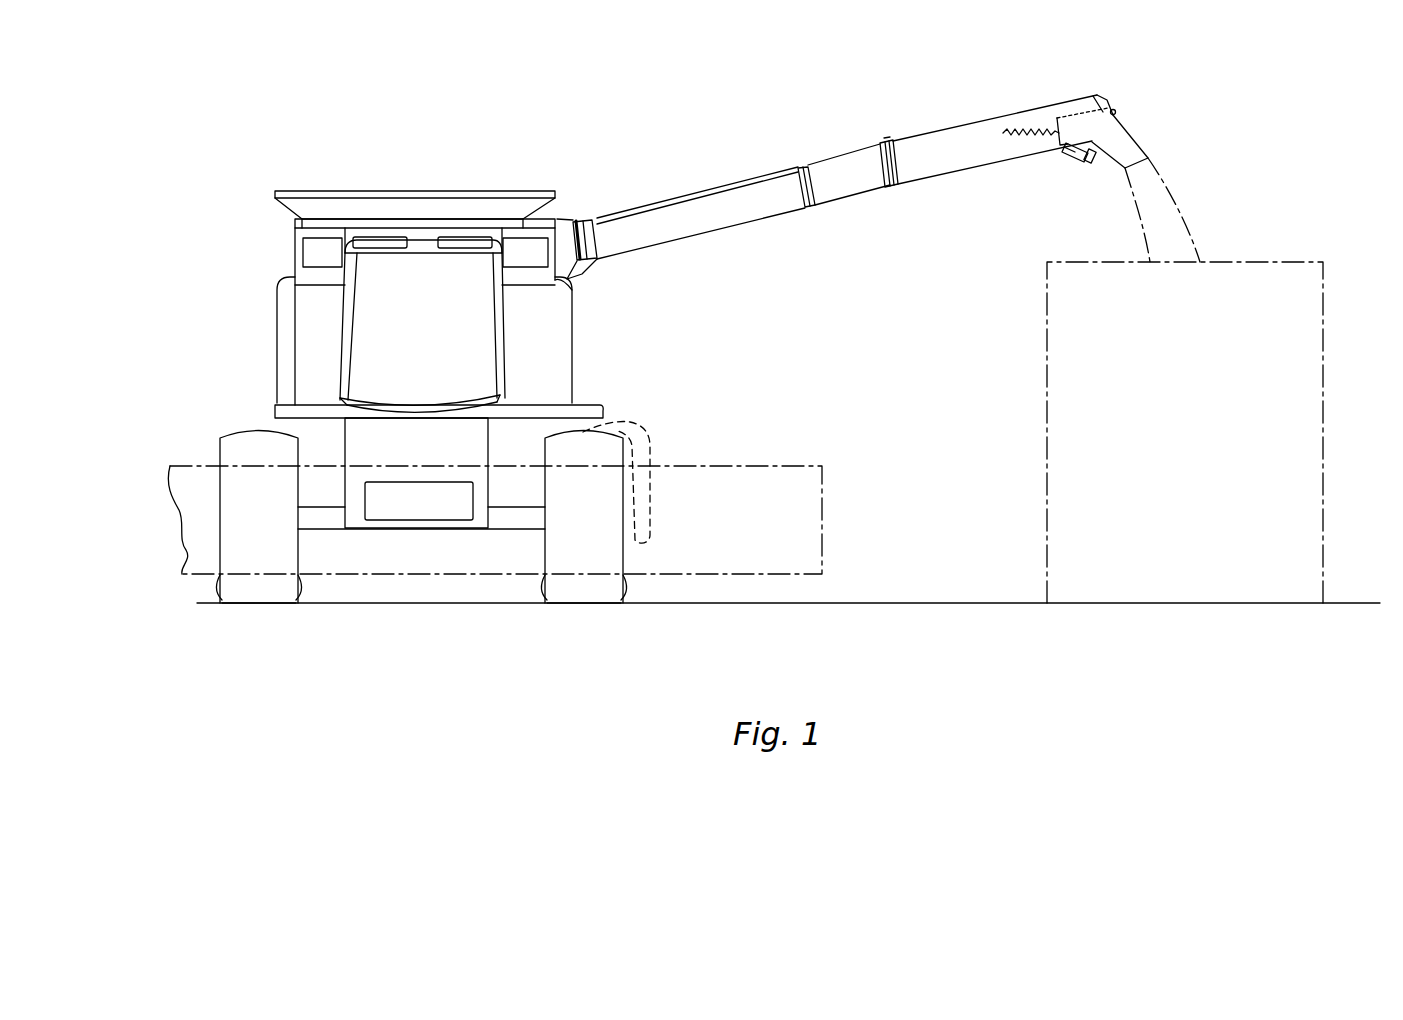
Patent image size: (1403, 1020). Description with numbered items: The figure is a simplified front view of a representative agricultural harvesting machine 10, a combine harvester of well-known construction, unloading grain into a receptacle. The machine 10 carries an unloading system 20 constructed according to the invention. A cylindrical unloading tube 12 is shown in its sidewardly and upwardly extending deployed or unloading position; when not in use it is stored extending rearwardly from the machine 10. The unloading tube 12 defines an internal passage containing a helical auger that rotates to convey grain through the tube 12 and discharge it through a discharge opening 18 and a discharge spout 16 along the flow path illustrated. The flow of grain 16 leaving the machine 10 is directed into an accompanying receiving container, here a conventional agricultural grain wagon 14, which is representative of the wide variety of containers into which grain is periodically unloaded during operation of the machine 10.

The agricultural harvesting machine 10 is at (527, 122).
The unloading tube 12 is at (929, 176).
The agricultural grain wagon 14 is at (580, 353).
The discharge spout 16 is at (1125, 127).
The discharge opening 18 is at (1140, 168).
The unloading system 20 is at (893, 122).